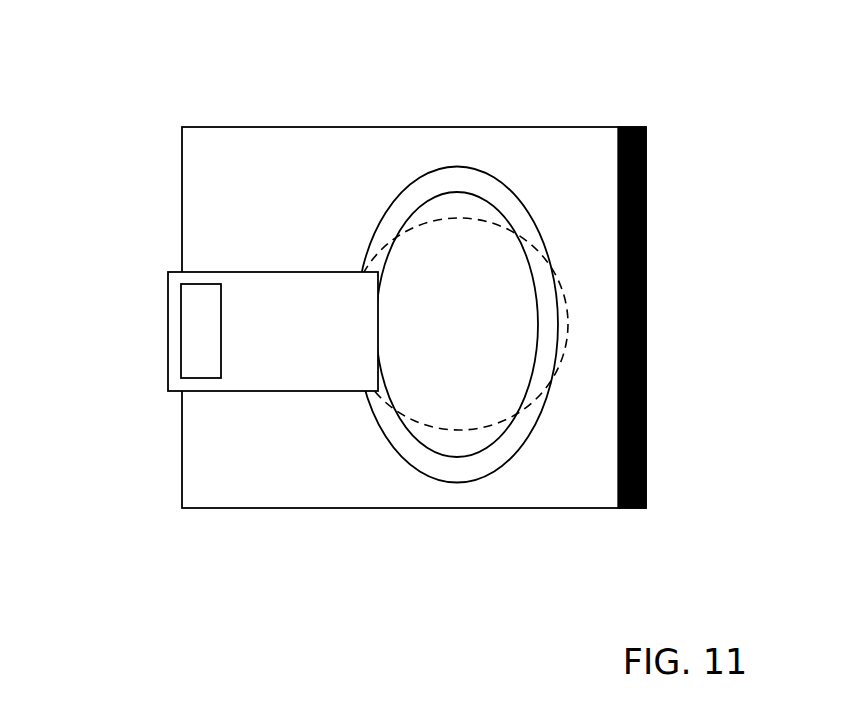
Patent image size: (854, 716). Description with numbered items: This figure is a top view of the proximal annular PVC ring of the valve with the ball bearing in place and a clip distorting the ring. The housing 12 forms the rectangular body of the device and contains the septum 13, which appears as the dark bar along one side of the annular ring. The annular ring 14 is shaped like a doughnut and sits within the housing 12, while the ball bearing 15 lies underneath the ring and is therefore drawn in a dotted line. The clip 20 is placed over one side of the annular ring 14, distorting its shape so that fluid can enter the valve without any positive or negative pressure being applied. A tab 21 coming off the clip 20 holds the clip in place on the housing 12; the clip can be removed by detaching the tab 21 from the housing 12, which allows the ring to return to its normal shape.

The housing 12 is at (276, 519).
The septum 13 is at (660, 246).
The annular ring 14 is at (464, 182).
The ball bearing 15 is at (581, 326).
The clip 20 is at (270, 258).
The tab 21 is at (185, 274).